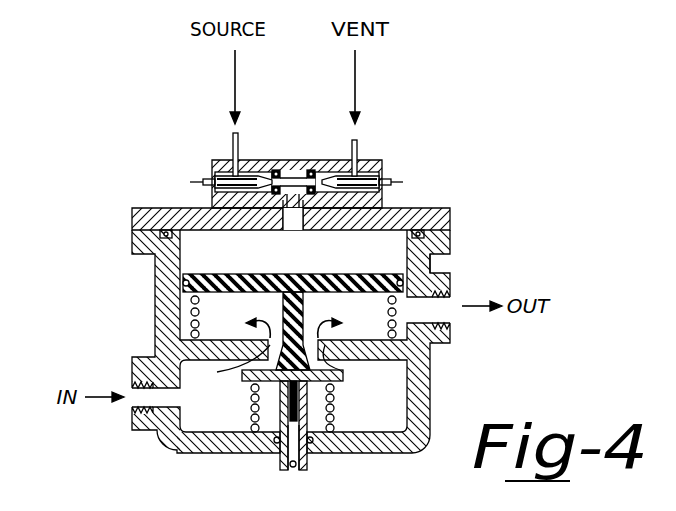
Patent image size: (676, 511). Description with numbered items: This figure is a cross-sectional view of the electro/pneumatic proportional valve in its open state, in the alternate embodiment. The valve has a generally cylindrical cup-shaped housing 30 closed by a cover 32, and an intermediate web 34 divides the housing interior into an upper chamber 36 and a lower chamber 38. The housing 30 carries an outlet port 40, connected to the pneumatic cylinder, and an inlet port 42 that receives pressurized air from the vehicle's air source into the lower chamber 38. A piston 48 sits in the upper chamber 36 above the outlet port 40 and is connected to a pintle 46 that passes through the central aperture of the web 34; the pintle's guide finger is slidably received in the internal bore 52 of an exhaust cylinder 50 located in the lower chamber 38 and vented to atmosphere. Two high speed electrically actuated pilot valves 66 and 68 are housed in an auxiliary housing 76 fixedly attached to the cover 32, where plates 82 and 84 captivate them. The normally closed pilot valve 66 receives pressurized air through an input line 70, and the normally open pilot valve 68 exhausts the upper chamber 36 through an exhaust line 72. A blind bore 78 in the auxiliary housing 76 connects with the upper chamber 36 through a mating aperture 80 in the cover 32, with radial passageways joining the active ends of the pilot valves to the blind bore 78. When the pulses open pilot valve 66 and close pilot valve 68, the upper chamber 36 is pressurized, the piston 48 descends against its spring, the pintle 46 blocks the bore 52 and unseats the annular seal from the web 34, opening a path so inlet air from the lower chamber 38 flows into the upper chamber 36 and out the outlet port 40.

The housing 30 is at (156, 330).
The cover 32 is at (132, 218).
The intermediate web 34 is at (385, 374).
The upper chamber 36 is at (221, 264).
The lower chamber 38 is at (221, 405).
The outlet port 40 is at (442, 312).
The inlet port 42 is at (133, 405).
The pintle 46 is at (278, 313).
The piston 48 is at (432, 262).
The exhaust cylinder 50 is at (312, 428).
The internal bore 52 is at (292, 466).
The pilot valve 66 is at (240, 178).
The pilot valve 68 is at (362, 178).
The input line 70 is at (228, 134).
The exhaust line 72 is at (350, 152).
The auxiliary housing 76 is at (294, 175).
The blind bore 78 is at (305, 195).
The mating aperture 80 is at (292, 200).
The plate 82 is at (213, 185).
The plate 84 is at (384, 184).